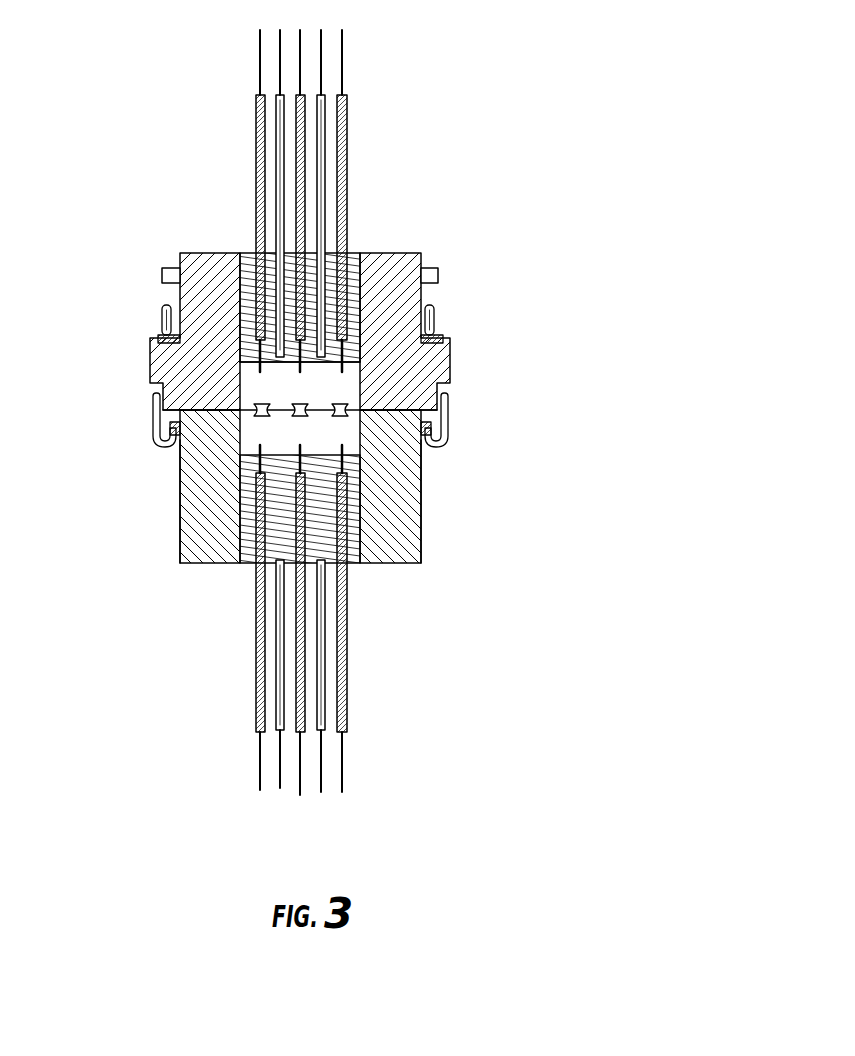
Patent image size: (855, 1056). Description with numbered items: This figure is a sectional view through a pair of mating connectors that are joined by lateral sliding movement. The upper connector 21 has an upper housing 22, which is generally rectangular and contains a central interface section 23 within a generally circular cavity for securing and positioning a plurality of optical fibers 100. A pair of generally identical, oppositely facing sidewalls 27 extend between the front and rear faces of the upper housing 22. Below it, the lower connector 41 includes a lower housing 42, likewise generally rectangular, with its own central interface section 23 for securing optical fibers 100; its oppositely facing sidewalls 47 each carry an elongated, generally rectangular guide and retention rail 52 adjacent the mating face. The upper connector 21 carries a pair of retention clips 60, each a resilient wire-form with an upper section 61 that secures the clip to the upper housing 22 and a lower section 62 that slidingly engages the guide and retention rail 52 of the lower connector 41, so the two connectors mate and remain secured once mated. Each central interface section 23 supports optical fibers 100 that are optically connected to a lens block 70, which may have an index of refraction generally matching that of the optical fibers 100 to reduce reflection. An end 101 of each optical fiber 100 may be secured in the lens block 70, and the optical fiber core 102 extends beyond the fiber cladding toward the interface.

The upper connector 21 is at (458, 214).
The upper housing 22 is at (200, 280).
The central interface section 23 is at (352, 252).
The sidewalls 27 is at (178, 298).
The lower connector 41 is at (477, 562).
The lower housing 42 is at (200, 540).
The sidewalls 47 is at (180, 493).
The guide and retention rail 52 is at (170, 432).
The retention clip 60 is at (160, 320).
The upper section 61 is at (158, 340).
The lower section 62 is at (155, 412).
The lens block 70 is at (343, 433).
The optical fibers 100 is at (277, 103).
The end 101 is at (297, 363).
The optical fiber core 102 is at (300, 793).